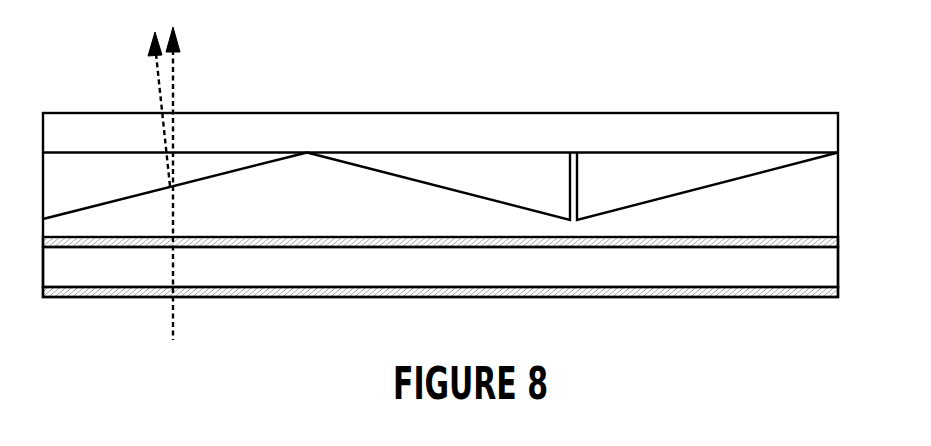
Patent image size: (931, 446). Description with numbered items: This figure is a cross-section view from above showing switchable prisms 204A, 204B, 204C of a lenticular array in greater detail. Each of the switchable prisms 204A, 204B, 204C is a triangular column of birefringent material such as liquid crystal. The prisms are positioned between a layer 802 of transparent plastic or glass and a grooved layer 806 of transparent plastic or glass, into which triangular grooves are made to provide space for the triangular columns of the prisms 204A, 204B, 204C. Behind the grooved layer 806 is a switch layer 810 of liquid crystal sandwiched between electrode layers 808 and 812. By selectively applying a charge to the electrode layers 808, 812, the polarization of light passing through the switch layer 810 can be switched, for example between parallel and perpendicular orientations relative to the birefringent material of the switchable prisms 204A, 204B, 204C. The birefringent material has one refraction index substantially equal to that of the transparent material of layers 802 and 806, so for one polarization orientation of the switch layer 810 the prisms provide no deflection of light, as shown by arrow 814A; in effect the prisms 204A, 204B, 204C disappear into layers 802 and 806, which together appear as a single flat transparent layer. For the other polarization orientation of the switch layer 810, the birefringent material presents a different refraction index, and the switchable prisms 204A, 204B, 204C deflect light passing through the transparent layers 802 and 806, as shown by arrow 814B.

The layer of transparent plastic or glass 802 is at (440, 133).
The switchable prism 204A is at (175, 186).
The switchable prism 204B is at (438, 187).
The switchable prism 204C is at (707, 187).
The grooved layer 806 is at (440, 194).
The electrode layer 808 is at (813, 223).
The switch layer 810 is at (440, 267).
The electrode layer 812 is at (797, 297).
The arrow 814A is at (173, 78).
The arrow 814B is at (158, 78).